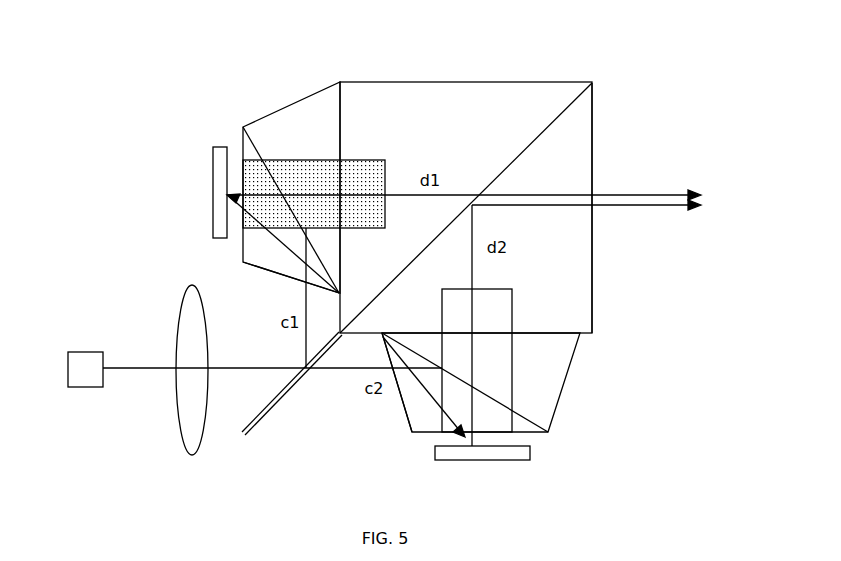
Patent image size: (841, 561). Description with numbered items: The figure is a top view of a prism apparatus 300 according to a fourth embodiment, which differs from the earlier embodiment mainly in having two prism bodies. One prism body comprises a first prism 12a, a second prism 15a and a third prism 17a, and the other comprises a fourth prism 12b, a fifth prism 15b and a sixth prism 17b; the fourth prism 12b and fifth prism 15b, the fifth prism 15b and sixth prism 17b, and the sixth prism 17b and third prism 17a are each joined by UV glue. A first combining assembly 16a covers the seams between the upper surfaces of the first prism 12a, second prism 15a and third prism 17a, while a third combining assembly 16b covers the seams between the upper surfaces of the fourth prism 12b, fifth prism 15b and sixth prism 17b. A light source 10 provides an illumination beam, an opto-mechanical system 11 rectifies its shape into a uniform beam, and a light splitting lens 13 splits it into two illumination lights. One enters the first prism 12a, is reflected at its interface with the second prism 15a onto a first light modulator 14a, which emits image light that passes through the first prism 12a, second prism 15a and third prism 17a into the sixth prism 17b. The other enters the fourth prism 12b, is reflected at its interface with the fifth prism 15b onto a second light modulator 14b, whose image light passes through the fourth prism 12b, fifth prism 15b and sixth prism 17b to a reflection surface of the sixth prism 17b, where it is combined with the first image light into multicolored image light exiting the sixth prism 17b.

The light source 10 is at (72, 350).
The opto-mechanical system 11 is at (187, 297).
The first prism 12a is at (272, 267).
The fourth prism 12b is at (418, 407).
The light splitting lens 13 is at (268, 417).
The first light modulator 14a is at (216, 146).
The second light modulator 14b is at (522, 452).
The second prism 15a is at (323, 110).
The fifth prism 15b is at (562, 357).
The first combining assembly 16a is at (295, 170).
The third combining assembly 16b is at (503, 384).
The third prism 17a is at (466, 95).
The sixth prism 17b is at (585, 254).
The prism apparatus 300 is at (378, 84).